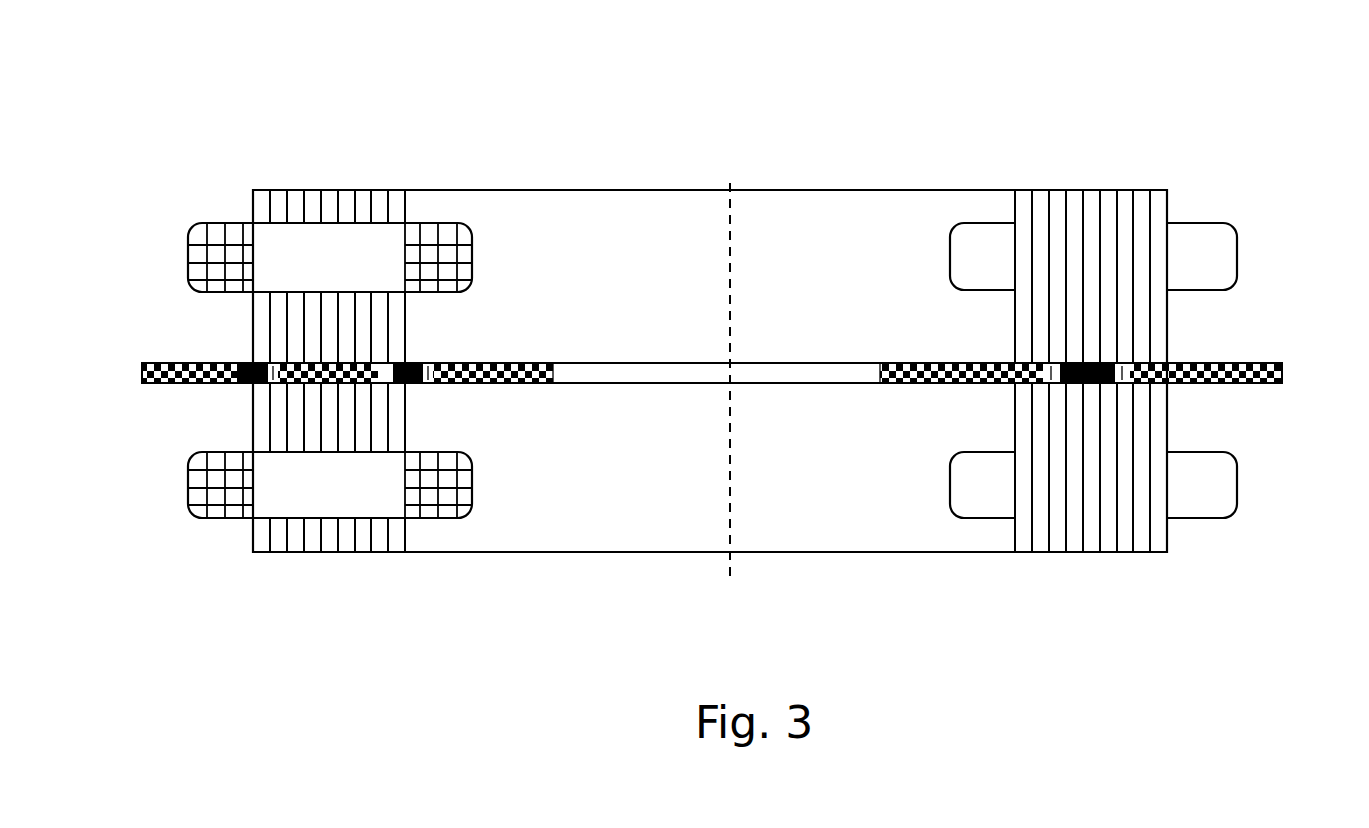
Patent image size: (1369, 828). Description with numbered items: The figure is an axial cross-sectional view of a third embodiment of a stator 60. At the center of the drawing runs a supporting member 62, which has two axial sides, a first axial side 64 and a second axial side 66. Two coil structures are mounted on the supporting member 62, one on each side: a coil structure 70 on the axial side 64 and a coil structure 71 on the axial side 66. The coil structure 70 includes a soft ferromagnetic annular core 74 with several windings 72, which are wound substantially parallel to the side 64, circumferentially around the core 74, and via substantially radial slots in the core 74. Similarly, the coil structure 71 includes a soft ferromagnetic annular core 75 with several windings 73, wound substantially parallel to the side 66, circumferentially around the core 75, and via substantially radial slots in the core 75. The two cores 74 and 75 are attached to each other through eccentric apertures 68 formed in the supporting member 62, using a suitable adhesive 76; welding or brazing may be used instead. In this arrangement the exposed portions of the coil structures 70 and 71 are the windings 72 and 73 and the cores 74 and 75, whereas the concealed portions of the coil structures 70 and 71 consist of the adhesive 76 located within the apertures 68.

The stator 60 is at (924, 136).
The supporting member 62 is at (704, 362).
The axial side 64 is at (545, 362).
The axial side 66 is at (540, 385).
The eccentric apertures 68 is at (231, 362).
The coil structure 70 is at (712, 274).
The coil structure 71 is at (703, 485).
The windings 72 is at (355, 276).
The windings 73 is at (355, 501).
The soft ferromagnetic annular core 74 is at (327, 200).
The soft ferromagnetic annular core 75 is at (295, 540).
The adhesive 76 is at (245, 384).